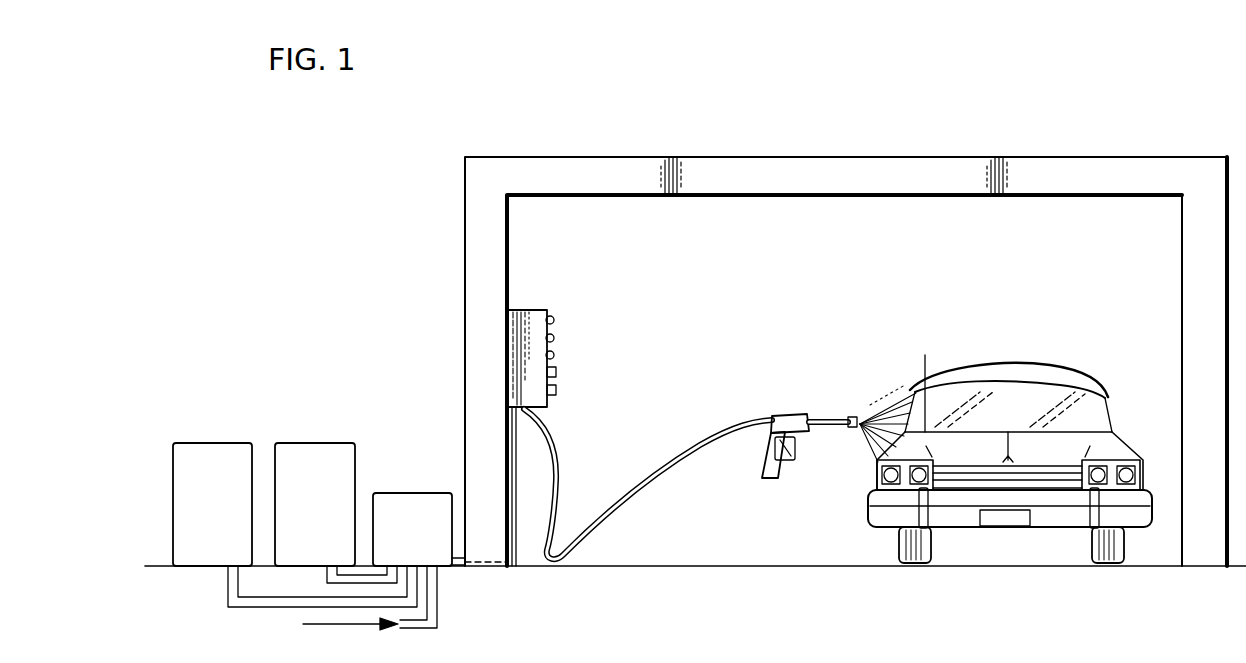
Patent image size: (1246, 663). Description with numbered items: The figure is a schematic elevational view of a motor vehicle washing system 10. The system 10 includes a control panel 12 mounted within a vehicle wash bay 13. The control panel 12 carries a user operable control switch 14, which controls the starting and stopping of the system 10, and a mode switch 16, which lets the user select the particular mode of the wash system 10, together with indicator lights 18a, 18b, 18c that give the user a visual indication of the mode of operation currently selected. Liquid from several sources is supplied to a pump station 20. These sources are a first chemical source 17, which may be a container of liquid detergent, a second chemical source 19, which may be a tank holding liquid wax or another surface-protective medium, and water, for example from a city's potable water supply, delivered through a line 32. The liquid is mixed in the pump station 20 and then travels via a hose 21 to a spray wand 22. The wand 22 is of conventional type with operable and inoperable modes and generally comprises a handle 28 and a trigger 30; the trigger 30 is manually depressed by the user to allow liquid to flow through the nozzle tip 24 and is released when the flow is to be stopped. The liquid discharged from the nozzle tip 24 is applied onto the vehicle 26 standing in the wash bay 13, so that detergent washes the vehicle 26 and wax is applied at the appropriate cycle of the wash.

The motor vehicle washing system 10 is at (1133, 86).
The control panel 12 is at (531, 310).
The vehicle wash bay 13 is at (748, 157).
The control switch 14 is at (557, 391).
The mode switch 16 is at (557, 372).
The CHEM 1 source 17 is at (333, 442).
The indicator light 18a is at (555, 318).
The indicator light 18b is at (556, 338).
The indicator light 18c is at (556, 356).
The CHEM 2 source 19 is at (226, 442).
The pump station 20 is at (398, 536).
The hose 21 is at (665, 480).
The spray wand 22 is at (816, 438).
The nozzle tip 24 is at (852, 430).
The vehicle 26 is at (1054, 363).
The handle 28 is at (766, 454).
The trigger 30 is at (786, 464).
The water supply line 32 is at (441, 604).